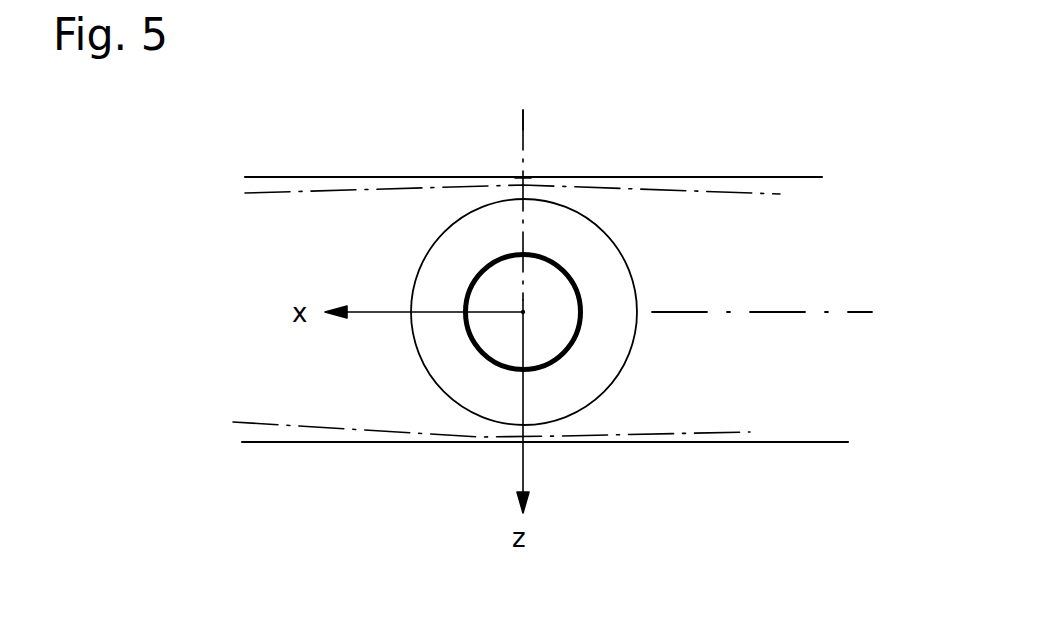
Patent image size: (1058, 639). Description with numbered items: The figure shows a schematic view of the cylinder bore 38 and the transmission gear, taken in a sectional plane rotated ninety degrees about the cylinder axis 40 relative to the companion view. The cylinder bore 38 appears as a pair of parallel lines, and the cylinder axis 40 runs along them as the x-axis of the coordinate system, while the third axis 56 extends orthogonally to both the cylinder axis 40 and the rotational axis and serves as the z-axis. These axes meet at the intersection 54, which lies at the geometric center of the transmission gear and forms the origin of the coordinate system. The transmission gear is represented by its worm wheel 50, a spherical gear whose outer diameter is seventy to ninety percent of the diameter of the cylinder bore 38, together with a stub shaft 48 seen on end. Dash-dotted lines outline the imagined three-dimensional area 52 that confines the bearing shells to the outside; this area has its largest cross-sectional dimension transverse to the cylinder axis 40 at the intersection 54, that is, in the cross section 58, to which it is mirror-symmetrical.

The cylinder bore 38 is at (803, 440).
The cylinder axis 40 is at (848, 308).
The stub shaft 48 is at (477, 350).
The worm wheel 50 is at (593, 353).
The three-dimensional area 52 is at (687, 192).
The intersection 54 is at (523, 312).
The third axis 56 is at (523, 125).
The cross section 58 is at (525, 170).